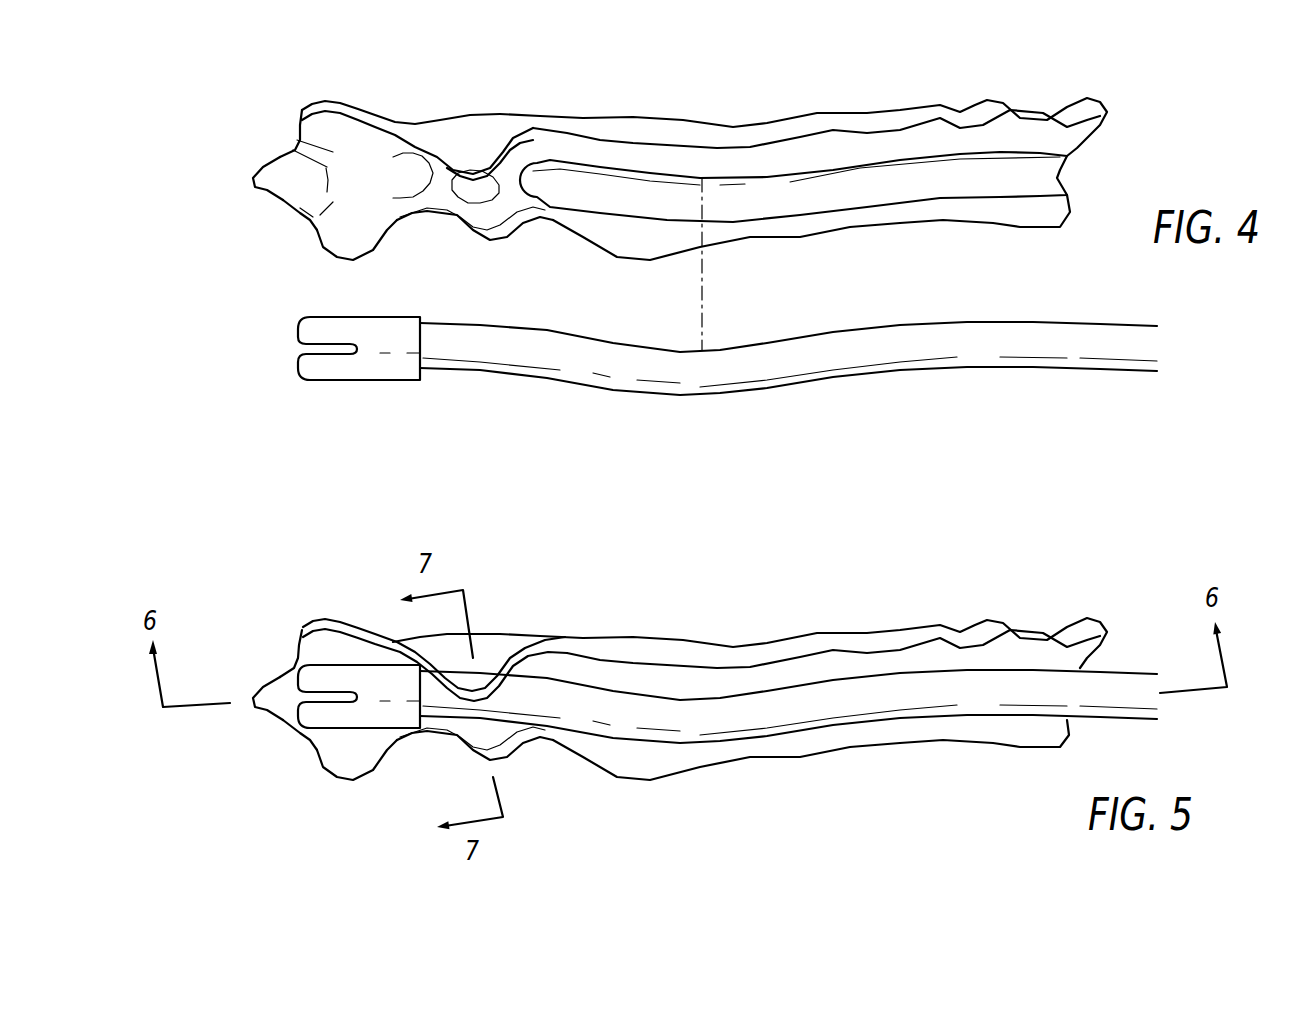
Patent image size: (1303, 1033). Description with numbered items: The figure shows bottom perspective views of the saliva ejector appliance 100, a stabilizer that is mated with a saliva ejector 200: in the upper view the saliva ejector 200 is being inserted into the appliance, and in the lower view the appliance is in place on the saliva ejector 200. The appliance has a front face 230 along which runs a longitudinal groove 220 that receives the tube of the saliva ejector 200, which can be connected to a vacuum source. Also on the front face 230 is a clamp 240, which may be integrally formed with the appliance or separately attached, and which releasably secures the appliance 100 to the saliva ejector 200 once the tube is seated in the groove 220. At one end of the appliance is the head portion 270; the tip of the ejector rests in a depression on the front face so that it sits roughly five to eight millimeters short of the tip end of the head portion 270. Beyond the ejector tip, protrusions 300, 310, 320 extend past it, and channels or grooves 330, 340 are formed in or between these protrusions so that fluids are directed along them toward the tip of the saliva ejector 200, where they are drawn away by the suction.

In FIG. 4, the saliva ejector appliance 100 is at (646, 173).
In FIG. 5, the saliva ejector appliance 100 is at (651, 680).
In FIG. 4, the saliva ejector 200 is at (727, 382).
In FIG. 5, the saliva ejector 200 is at (727, 724).
In FIG. 4, the longitudinal groove 220 is at (793, 208).
In FIG. 4, the front face 230 is at (803, 159).
In FIG. 5, the front face 230 is at (750, 678).
In FIG. 4, the clamp 240 is at (481, 244).
In FIG. 5, the clamp 240 is at (481, 698).
In FIG. 4, the head portion 270 is at (417, 109).
In FIG. 5, the head portion 270 is at (435, 617).
In FIG. 4, the protrusion 300 is at (325, 183).
In FIG. 5, the protrusion 300 is at (280, 702).
In FIG. 4, the protrusion 310 is at (221, 186).
In FIG. 5, the protrusion 310 is at (223, 712).
In FIG. 4, the protrusion 320 is at (317, 264).
In FIG. 5, the protrusion 320 is at (317, 783).
In FIG. 4, the channel or groove 330 is at (242, 138).
In FIG. 5, the channel or groove 330 is at (241, 653).
In FIG. 4, the channel or groove 340 is at (268, 231).
In FIG. 5, the channel or groove 340 is at (260, 751).